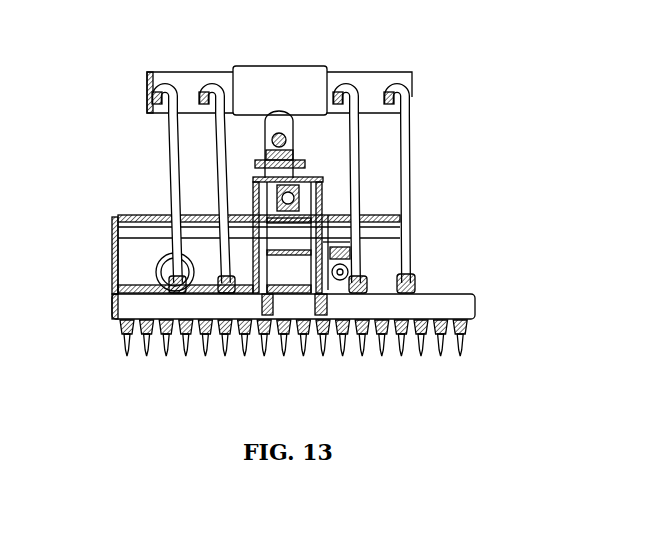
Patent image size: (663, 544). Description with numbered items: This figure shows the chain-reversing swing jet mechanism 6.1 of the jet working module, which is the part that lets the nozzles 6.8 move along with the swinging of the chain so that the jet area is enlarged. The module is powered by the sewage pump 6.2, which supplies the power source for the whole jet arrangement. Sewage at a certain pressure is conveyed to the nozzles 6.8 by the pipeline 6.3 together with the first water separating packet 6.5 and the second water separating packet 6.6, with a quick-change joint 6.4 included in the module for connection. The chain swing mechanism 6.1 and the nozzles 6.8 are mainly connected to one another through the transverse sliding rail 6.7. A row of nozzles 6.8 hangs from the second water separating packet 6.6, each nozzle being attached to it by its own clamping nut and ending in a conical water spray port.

The chain-reversing swing jet mechanism 6.1 is at (158, 280).
The sewage pump 6.2 is at (112, 225).
The pipeline 6.3 is at (173, 182).
The quick-change joint 6.4 is at (147, 83).
The first water separating packet 6.5 is at (412, 76).
The second water separating packet 6.6 is at (385, 306).
The transverse sliding rail 6.7 is at (290, 291).
The nozzles 6.8 is at (467, 332).